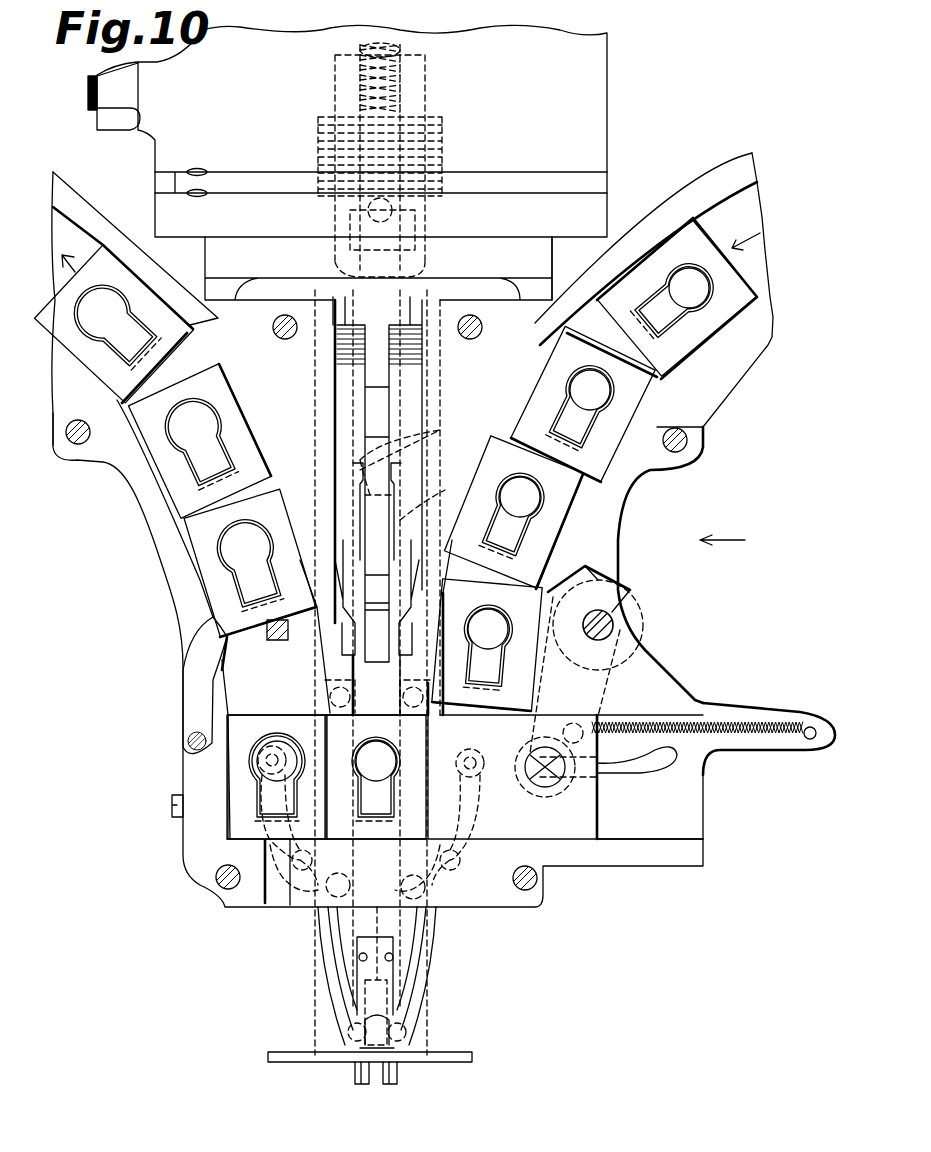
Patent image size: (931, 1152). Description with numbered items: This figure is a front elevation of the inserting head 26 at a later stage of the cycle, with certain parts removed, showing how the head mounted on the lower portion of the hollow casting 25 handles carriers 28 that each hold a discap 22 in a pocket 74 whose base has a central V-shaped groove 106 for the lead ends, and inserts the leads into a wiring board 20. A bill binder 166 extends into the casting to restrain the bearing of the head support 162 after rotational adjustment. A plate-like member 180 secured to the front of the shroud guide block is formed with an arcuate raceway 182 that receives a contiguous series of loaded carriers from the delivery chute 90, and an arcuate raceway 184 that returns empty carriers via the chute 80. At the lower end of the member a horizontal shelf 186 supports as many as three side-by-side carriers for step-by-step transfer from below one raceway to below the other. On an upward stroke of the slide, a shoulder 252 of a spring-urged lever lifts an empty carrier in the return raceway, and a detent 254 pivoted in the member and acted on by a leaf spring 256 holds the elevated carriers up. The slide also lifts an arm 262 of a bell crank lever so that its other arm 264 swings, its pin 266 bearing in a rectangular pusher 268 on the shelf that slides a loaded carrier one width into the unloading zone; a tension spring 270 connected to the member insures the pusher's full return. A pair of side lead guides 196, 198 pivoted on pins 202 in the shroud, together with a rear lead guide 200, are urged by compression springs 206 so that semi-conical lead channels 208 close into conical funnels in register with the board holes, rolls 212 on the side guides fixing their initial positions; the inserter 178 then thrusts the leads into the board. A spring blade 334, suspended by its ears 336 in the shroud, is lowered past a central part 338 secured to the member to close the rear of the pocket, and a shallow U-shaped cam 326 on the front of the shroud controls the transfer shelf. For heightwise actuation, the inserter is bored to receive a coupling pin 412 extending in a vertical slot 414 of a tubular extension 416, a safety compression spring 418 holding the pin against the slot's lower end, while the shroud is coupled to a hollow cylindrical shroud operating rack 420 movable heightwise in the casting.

The wiring board 20 is at (460, 1052).
The discap 22 is at (340, 1070).
The hollow casting 25 is at (607, 100).
The inserting head 26 is at (735, 540).
The carriers 28 is at (195, 328).
The pocket 74 is at (95, 340).
The chute 80 is at (100, 205).
The delivery chute 90 is at (678, 195).
The V-shaped groove 106 is at (190, 465).
The support 162 is at (560, 280).
The bill binder 166 is at (92, 108).
The inserter 178 is at (395, 1015).
The plate-like member 180 is at (378, 611).
The arcuate raceway 182 is at (500, 445).
The arcuate raceway 184 is at (250, 430).
The horizontal shelf 186 is at (558, 840).
The side lead guide 196 is at (425, 980).
The side lead guide 198 is at (330, 990).
The rear lead guide 200 is at (377, 945).
The pins 202 is at (300, 870).
The compression springs 206 is at (370, 837).
The semi-conical lead channels 208 is at (348, 1030).
The rolls 212 is at (278, 745).
The shoulder 252 is at (280, 641).
The detent 254 is at (225, 650).
The leaf spring 256 is at (183, 712).
The arm 262 is at (598, 580).
The arm 264 is at (610, 690).
The pin 266 is at (533, 780).
The pusher 268 is at (600, 825).
The tension spring 270 is at (742, 722).
The U-shaped cam 326 is at (381, 589).
The spring blade 334 is at (335, 510).
The ears 336 is at (418, 458).
The central part 338 is at (438, 493).
The coupling pin 412 is at (350, 204).
The slot 414 is at (395, 205).
The tubular extension 416 is at (405, 97).
The safety compression spring 418 is at (395, 80).
The shroud operating rack 420 is at (442, 135).